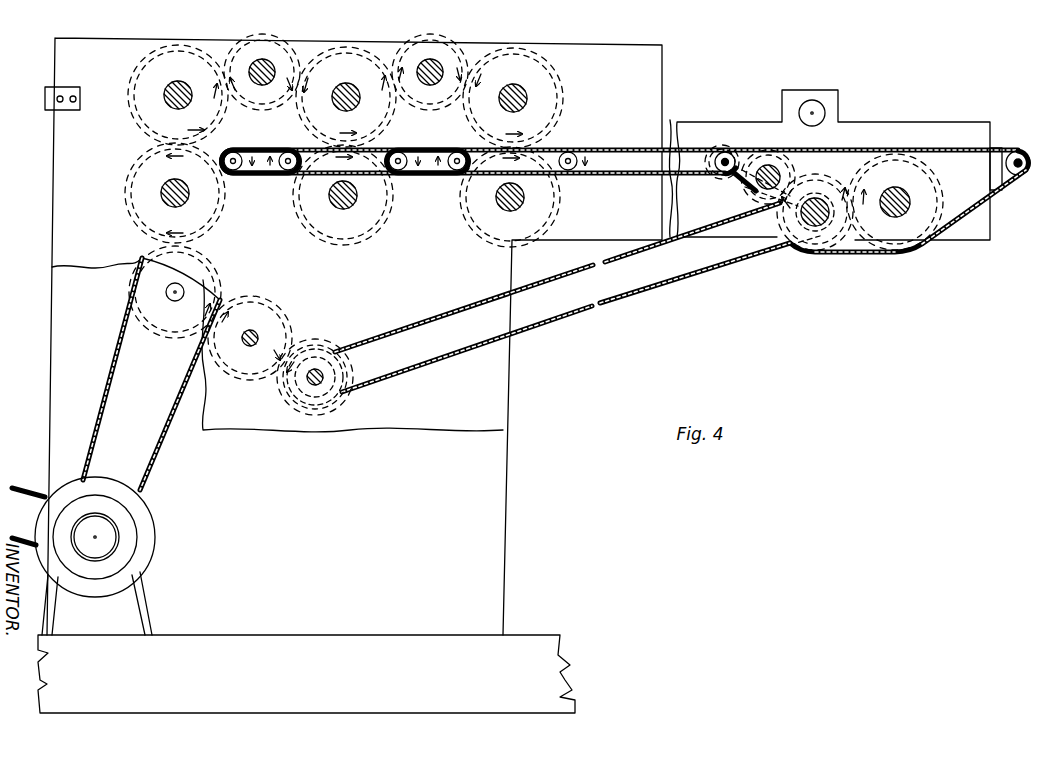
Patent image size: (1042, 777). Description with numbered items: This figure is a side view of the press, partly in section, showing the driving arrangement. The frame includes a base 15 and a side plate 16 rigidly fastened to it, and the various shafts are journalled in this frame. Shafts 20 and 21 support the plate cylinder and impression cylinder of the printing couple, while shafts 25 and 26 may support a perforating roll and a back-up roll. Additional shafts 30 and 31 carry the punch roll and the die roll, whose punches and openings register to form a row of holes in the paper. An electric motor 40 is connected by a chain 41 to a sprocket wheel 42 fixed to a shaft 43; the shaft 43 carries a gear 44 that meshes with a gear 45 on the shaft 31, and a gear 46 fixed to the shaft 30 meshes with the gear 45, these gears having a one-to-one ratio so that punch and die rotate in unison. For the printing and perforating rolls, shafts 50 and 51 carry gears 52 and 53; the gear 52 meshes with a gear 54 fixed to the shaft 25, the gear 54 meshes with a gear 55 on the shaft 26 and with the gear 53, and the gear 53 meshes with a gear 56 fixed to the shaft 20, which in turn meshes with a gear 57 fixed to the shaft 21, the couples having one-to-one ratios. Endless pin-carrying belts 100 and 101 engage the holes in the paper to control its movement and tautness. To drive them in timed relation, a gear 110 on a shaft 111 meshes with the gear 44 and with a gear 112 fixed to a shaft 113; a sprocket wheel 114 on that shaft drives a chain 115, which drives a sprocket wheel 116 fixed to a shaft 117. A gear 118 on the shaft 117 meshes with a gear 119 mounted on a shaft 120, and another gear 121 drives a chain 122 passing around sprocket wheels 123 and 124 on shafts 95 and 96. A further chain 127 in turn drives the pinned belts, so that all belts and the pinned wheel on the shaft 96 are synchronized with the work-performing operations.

The base 15 is at (545, 635).
The side plate 16 is at (515, 480).
The shaft 20 is at (514, 84).
The shaft 21 is at (524, 198).
The shaft 25 is at (347, 83).
The shaft 26 is at (345, 209).
The shaft 30 is at (178, 81).
The shaft 31 is at (161, 192).
The electric motor 40 is at (157, 530).
The chain 41 is at (110, 376).
The sprocket wheel 42 is at (156, 318).
The shaft 43 is at (165, 292).
The gear 44 is at (219, 262).
The gear 45 is at (136, 222).
The gear 46 is at (200, 52).
The shaft 50 is at (262, 59).
The shaft 51 is at (431, 59).
The gear 52 is at (284, 44).
The gear 53 is at (462, 46).
The gear 54 is at (372, 56).
The gear 55 is at (386, 220).
The gear 56 is at (545, 58).
The gear 57 is at (482, 232).
The shaft 95 is at (730, 154).
The shaft 96 is at (1018, 176).
The endless belt 100 is at (262, 175).
The endless belt 101 is at (428, 175).
The gear 110 is at (272, 310).
The shaft 111 is at (250, 330).
The gear 112 is at (334, 350).
The shaft 113 is at (315, 369).
The sprocket wheel 114 is at (342, 388).
The chain 115 is at (565, 322).
The sprocket wheel 116 is at (792, 246).
The shaft 117 is at (823, 220).
The gear 118 is at (822, 250).
The gear 119 is at (901, 252).
The shaft 120 is at (902, 194).
The gear 121 is at (858, 165).
The chain 122 is at (985, 240).
The sprocket wheel 123 is at (716, 148).
The sprocket wheel 124 is at (1008, 152).
The chain 127 is at (615, 150).